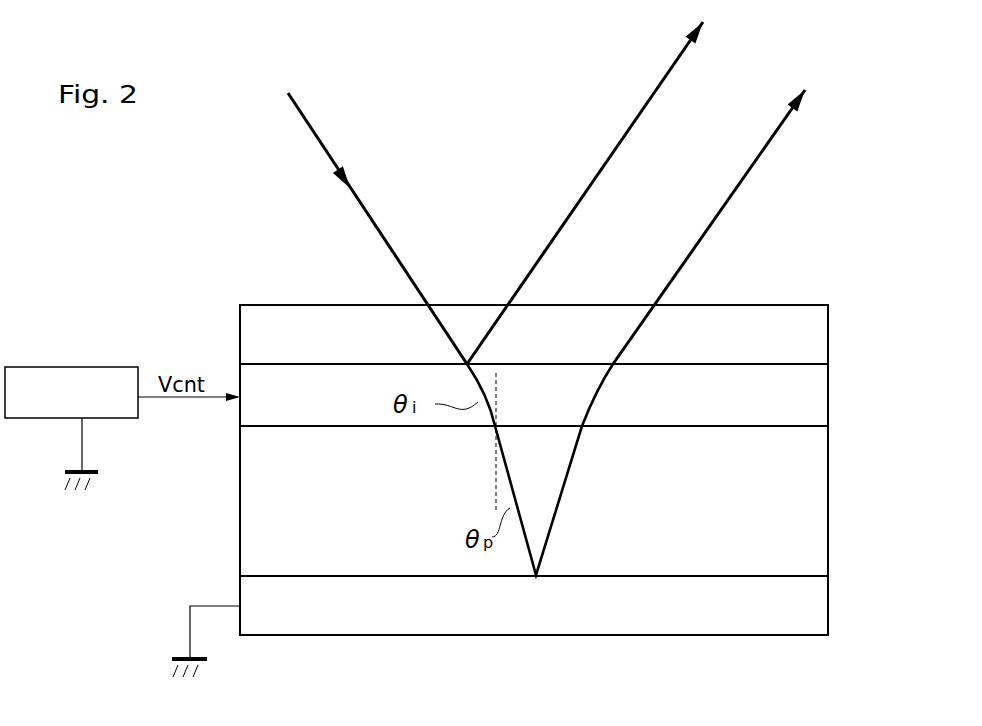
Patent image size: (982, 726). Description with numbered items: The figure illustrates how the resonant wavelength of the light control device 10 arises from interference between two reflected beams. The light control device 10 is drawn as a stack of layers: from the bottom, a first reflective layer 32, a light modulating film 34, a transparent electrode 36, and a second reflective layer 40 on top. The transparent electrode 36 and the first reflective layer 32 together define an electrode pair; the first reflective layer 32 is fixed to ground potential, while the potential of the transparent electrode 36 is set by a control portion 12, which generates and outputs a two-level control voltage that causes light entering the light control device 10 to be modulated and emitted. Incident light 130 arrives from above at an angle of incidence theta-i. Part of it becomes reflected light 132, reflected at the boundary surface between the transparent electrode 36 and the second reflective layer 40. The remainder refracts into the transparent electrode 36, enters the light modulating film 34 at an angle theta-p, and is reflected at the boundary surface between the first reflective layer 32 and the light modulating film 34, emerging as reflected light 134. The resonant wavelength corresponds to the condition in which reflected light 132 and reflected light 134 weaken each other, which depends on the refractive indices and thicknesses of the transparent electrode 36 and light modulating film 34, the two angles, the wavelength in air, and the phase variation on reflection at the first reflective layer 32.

The light control device 10 is at (562, 500).
The control portion 12 is at (101, 344).
The first reflective layer 32 is at (822, 605).
The light modulating film 34 is at (822, 500).
The transparent electrode 36 is at (822, 396).
The second reflective layer 40 is at (822, 335).
The incident light 130 is at (313, 132).
The reflected light 132 is at (655, 82).
The reflected light 134 is at (752, 147).